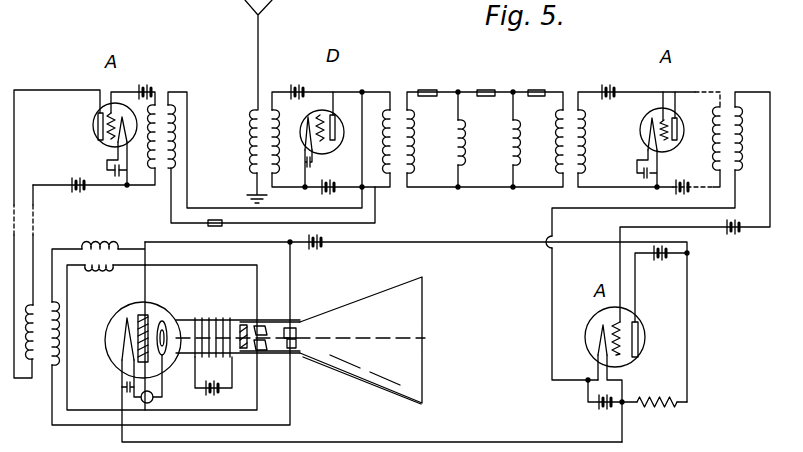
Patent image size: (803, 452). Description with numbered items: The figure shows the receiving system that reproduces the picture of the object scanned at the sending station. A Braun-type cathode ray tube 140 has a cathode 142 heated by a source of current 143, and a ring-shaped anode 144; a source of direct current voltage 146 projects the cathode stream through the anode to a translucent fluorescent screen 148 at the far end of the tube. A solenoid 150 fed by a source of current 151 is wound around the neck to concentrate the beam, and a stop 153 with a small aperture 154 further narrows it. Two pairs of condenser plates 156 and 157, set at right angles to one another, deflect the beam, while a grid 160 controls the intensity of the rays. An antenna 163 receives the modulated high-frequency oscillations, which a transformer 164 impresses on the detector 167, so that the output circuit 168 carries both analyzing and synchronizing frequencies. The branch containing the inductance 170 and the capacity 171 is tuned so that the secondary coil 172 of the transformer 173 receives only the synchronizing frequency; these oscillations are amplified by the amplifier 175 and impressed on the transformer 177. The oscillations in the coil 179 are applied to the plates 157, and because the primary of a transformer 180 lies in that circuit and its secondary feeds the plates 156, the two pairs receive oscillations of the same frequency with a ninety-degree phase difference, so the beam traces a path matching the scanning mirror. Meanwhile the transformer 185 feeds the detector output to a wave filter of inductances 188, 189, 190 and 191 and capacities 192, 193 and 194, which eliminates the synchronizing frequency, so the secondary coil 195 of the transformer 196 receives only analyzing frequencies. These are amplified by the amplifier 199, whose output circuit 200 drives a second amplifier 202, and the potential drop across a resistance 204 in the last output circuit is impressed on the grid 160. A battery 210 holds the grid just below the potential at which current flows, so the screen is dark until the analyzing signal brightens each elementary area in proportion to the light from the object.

The cathode ray tube 140 is at (176, 320).
The cathode 142 is at (122, 340).
The source of current 143 is at (122, 388).
The anode 144 is at (153, 318).
The source of direct current voltage 146 is at (154, 397).
The screen 148 is at (422, 328).
The solenoid 150 is at (222, 320).
The source of current 151 is at (215, 389).
The stop 153 is at (244, 322).
The aperture 154 is at (259, 352).
The condenser plates 156 is at (260, 324).
The condenser plates 157 is at (298, 326).
The grid 160 is at (201, 337).
The antenna 163 is at (258, 57).
The transformer 164 is at (268, 107).
The detector 167 is at (323, 113).
The output circuit 168 is at (343, 171).
The inductance 170 is at (178, 140).
The capacity 171 is at (220, 226).
The secondary coil 172 is at (152, 168).
The transformer 173 is at (157, 103).
The amplifier 175 is at (111, 110).
The transformer 177 is at (38, 300).
The coil 179 is at (50, 367).
The transformer 180 is at (117, 255).
The transformer 185 is at (395, 108).
The inductance 188 is at (410, 150).
The inductance 189 is at (463, 150).
The inductance 190 is at (516, 150).
The inductance 191 is at (559, 131).
The capacity 192 is at (420, 90).
The capacity 193 is at (489, 82).
The capacity 194 is at (537, 82).
The secondary coil 195 is at (584, 140).
The transformer 196 is at (574, 100).
The amplifier 199 is at (666, 118).
The output circuit 200 is at (712, 138).
The second amplifier 202 is at (637, 323).
The resistance 204 is at (657, 404).
The battery 210 is at (330, 243).